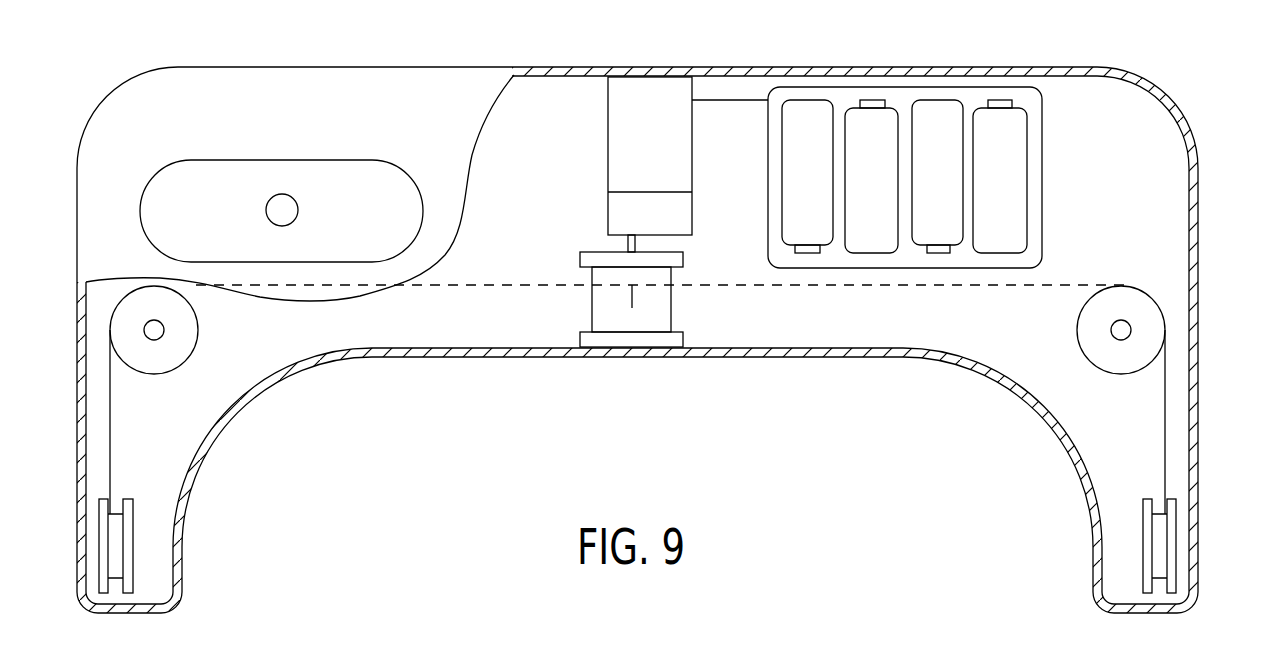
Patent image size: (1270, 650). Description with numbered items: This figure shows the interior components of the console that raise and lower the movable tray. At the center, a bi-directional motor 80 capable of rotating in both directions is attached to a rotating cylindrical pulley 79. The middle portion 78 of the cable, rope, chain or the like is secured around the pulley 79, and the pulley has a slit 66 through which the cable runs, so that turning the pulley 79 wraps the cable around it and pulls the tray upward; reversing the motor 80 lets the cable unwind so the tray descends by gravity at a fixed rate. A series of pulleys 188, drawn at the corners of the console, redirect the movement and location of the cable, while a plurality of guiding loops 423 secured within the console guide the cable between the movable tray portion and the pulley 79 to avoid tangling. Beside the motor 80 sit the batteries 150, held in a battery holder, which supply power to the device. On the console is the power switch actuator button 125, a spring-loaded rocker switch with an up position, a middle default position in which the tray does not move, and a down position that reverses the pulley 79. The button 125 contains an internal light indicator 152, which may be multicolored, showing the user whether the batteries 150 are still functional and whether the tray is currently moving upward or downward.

The power switch actuator button 125 is at (205, 173).
The internal light indicator 152 is at (287, 207).
The bi-directional motor 80 is at (652, 100).
The batteries 150 is at (803, 117).
The middle portion of the cable 78 is at (630, 287).
The slit 66 is at (632, 300).
The rotating cylindrical pulley 79 is at (637, 322).
The guiding loops 423 is at (778, 287).
The pulleys 188 is at (125, 317).